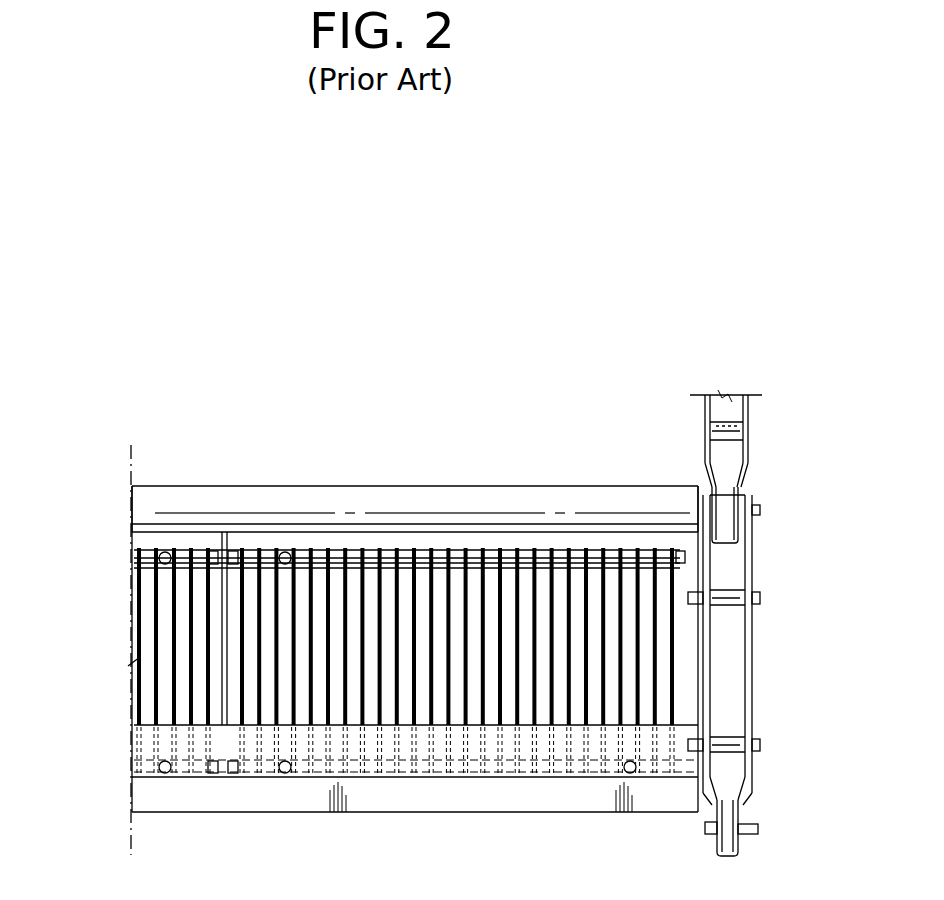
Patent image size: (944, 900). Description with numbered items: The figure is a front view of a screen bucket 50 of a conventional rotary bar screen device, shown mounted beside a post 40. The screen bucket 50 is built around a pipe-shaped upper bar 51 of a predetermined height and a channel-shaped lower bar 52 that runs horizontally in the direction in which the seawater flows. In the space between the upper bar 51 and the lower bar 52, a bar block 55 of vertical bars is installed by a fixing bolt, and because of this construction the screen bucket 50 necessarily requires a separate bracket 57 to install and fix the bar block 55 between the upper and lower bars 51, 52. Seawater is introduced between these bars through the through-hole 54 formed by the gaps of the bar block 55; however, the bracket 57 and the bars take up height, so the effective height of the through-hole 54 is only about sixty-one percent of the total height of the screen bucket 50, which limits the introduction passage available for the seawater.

The fence post 40 is at (752, 638).
The screen bucket 50 is at (235, 478).
The upper bar 51 is at (383, 490).
The lower bar 52 is at (425, 795).
The through-hole 54 is at (165, 692).
The bar block 55 is at (150, 602).
The bracket 57 is at (527, 540).